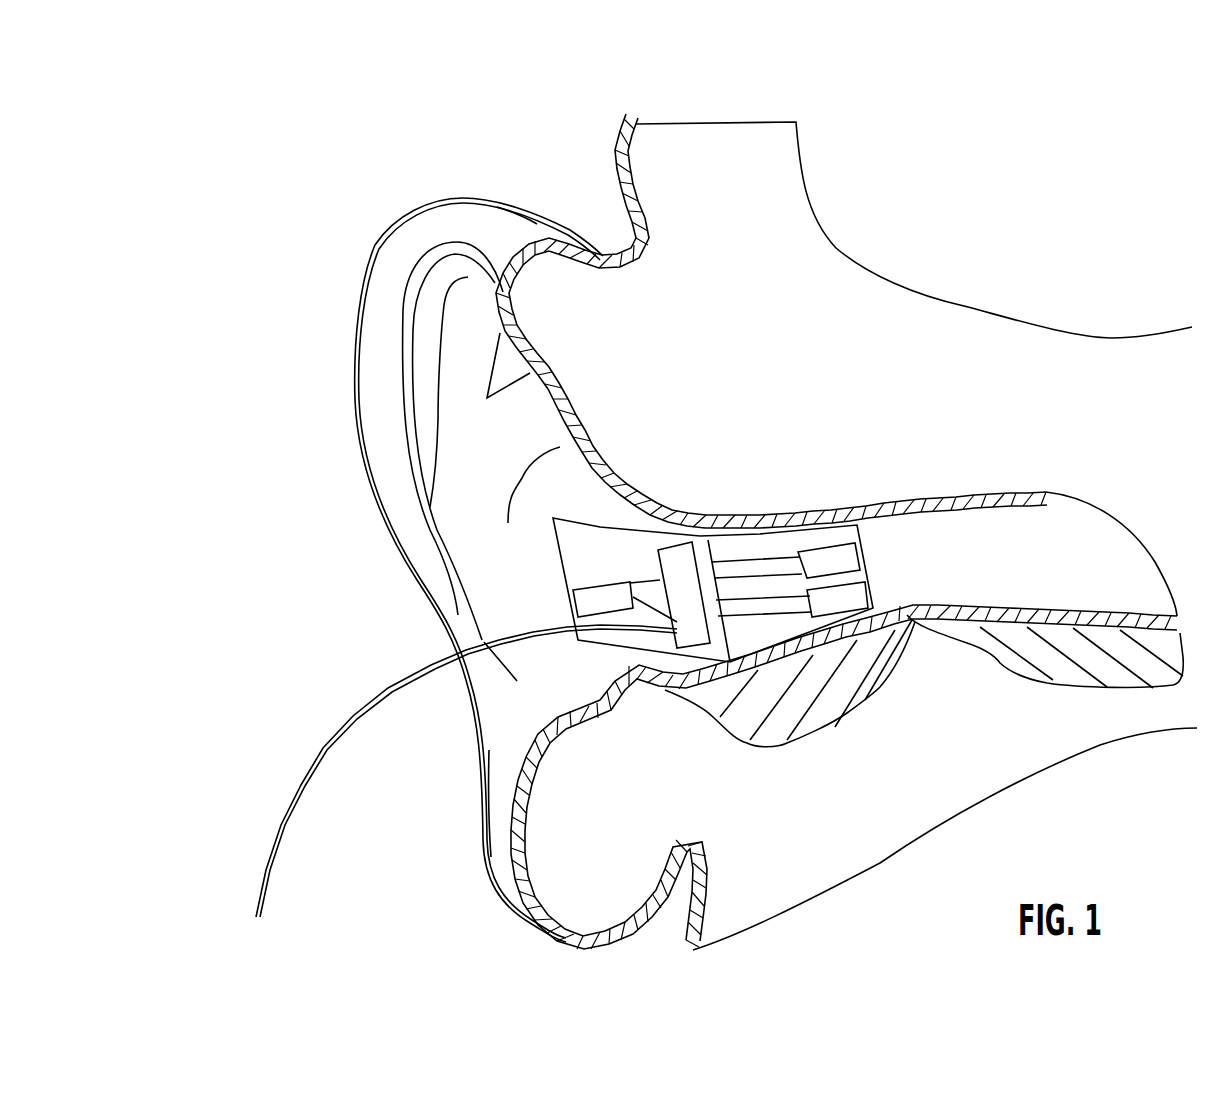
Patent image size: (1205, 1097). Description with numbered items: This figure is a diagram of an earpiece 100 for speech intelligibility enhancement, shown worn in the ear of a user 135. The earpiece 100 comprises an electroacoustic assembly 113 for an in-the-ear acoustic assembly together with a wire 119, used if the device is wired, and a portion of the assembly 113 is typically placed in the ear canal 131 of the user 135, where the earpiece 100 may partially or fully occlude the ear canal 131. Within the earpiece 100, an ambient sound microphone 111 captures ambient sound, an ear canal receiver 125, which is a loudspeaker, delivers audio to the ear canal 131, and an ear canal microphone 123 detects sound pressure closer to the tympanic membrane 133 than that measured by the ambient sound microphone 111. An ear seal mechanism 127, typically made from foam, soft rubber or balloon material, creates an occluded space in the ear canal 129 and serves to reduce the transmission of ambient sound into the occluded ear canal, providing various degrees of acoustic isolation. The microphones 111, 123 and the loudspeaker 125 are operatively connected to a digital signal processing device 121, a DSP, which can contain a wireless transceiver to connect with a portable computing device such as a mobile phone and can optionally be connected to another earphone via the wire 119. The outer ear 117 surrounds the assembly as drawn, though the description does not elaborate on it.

The earpiece 100 is at (1105, 836).
The ambient sound microphone 111 is at (608, 606).
The electroacoustic assembly 113 is at (582, 513).
The outer ear (pinna) 117 is at (343, 282).
The wire 119 is at (296, 764).
The digital signal processing device 121 is at (690, 608).
The ear canal microphone 123 is at (840, 606).
The ear canal receiver 125 is at (829, 551).
The ear seal mechanism 127 is at (739, 497).
The ear canal 129 is at (908, 494).
The ear canal 131 is at (1051, 574).
The tympanic membrane 133 is at (1134, 520).
The user 135 is at (978, 196).